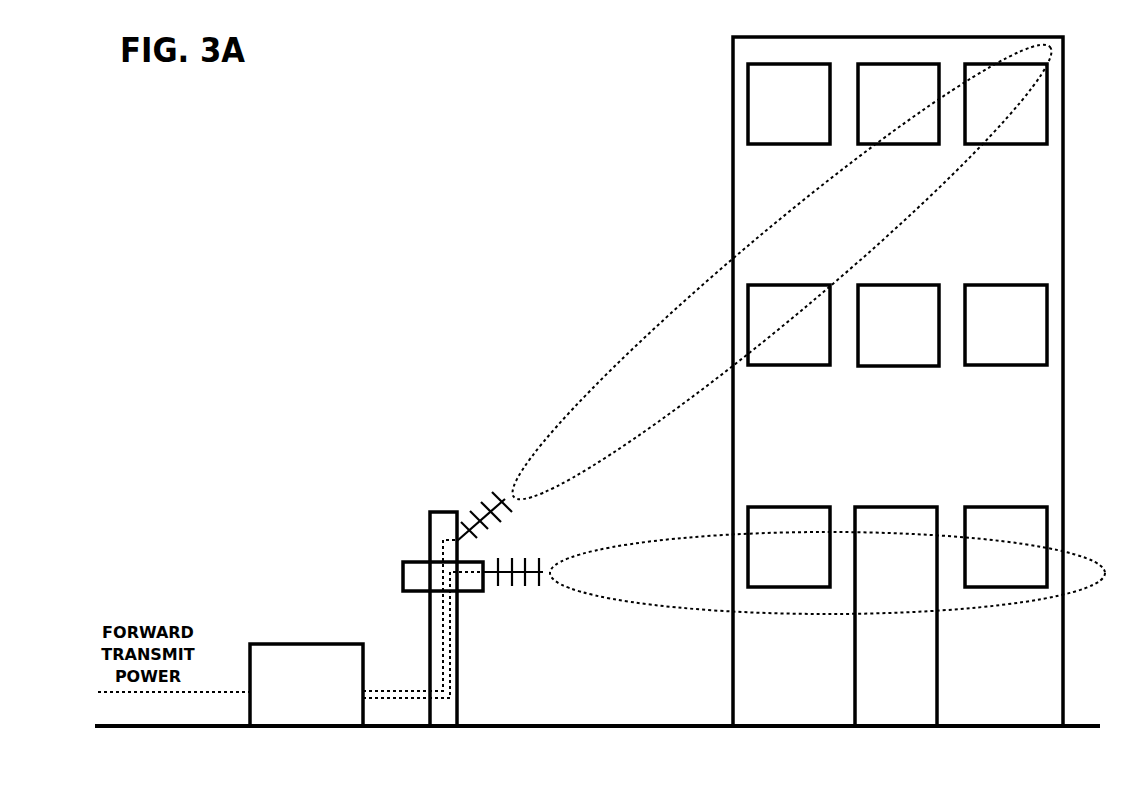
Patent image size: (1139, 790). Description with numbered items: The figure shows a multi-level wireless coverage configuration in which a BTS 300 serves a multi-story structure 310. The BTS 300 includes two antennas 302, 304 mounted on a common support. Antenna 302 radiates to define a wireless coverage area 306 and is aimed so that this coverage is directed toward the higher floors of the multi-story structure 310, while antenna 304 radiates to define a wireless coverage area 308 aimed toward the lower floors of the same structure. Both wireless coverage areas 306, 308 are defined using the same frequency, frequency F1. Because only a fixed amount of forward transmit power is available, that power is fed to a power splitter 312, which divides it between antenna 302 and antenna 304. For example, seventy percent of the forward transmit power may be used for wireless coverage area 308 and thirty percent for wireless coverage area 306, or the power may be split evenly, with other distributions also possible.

The BTS 300 is at (402, 519).
The antenna 302 is at (457, 484).
The antenna 304 is at (541, 610).
The wireless coverage area 306 is at (650, 295).
The wireless coverage area 308 is at (705, 628).
The multi-story structure 310 is at (702, 110).
The power splitter 312 is at (247, 618).